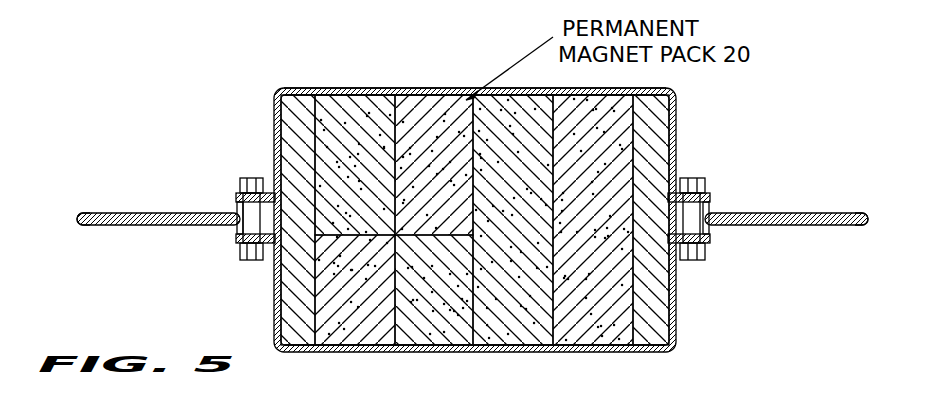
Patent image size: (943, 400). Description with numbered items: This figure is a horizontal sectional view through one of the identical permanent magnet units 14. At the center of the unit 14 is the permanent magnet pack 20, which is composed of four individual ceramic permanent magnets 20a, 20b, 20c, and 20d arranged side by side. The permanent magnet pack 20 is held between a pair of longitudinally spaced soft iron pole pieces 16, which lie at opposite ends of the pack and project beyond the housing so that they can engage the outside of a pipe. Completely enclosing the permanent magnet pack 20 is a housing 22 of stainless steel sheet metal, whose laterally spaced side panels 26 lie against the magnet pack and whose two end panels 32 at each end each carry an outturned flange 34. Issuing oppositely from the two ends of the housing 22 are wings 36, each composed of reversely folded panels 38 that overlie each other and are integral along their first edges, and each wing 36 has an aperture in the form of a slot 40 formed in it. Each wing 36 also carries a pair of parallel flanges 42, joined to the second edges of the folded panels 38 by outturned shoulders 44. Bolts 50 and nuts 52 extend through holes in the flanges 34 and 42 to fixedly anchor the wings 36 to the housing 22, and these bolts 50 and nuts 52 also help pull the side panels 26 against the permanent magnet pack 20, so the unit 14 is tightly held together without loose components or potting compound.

The permanent magnet unit 14 is at (690, 106).
The pole piece 16 is at (285, 310).
The permanent magnet pack 20 is at (474, 220).
The ceramic permanent magnet 20a is at (352, 94).
The ceramic permanent magnet 20b is at (436, 312).
The ceramic permanent magnet 20c is at (518, 318).
The ceramic permanent magnet 20d is at (598, 318).
The housing 22 is at (389, 85).
The side panel 26 is at (432, 88).
The end panel 32 is at (268, 103).
The outturned flange 34 is at (237, 193).
The wing 36 is at (75, 233).
The reversely folded panel 38 is at (115, 212).
The slot 40 is at (155, 226).
The flange 42 is at (264, 214).
The outturned shoulder 44 is at (237, 206).
The bolt 50 is at (250, 177).
The nut 52 is at (240, 255).